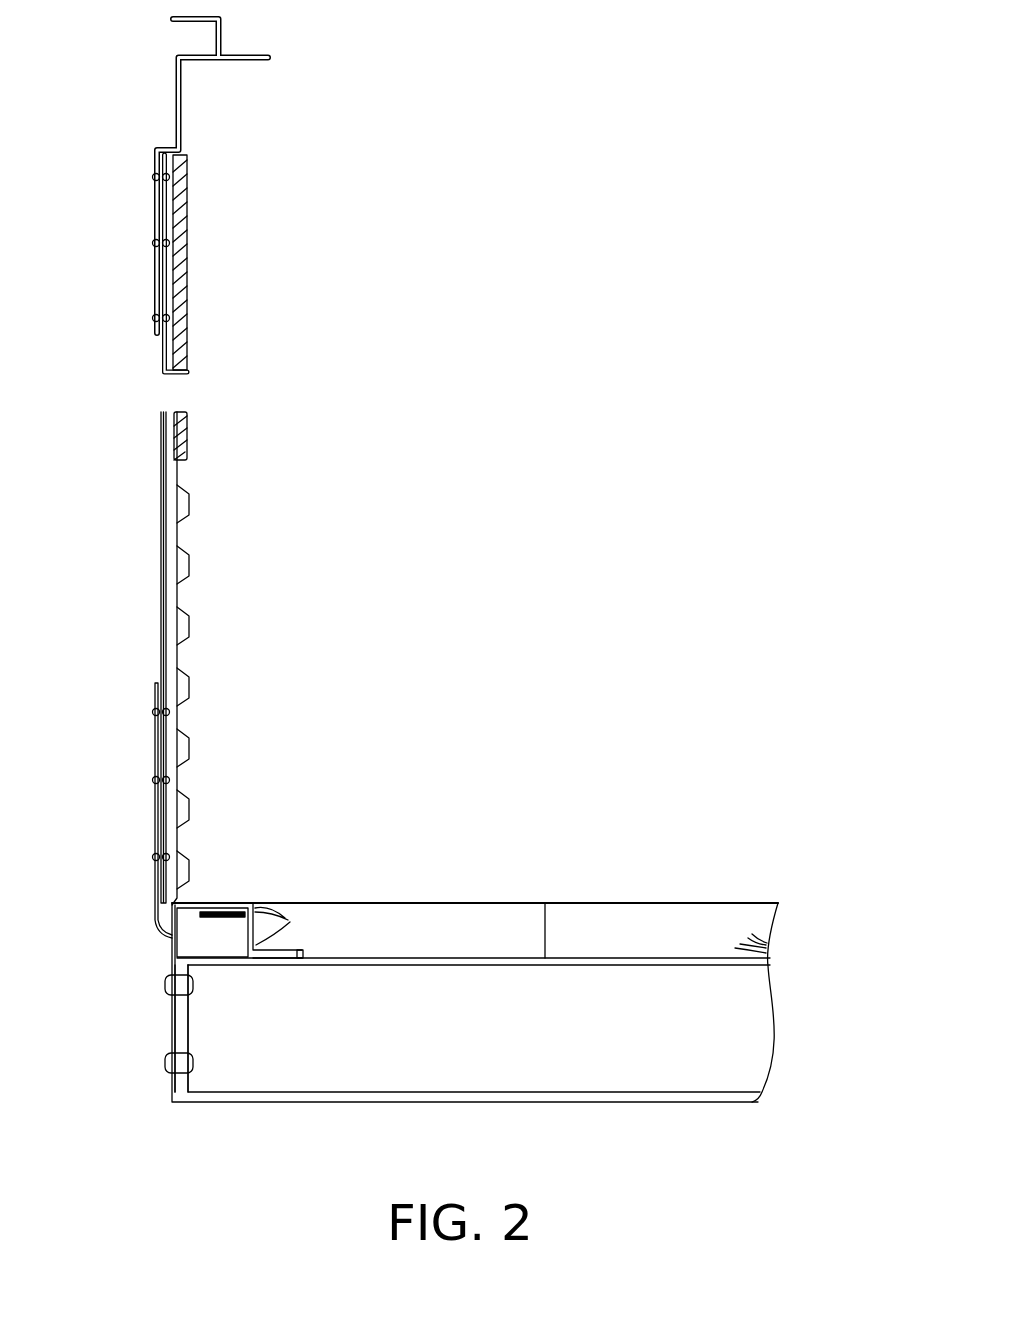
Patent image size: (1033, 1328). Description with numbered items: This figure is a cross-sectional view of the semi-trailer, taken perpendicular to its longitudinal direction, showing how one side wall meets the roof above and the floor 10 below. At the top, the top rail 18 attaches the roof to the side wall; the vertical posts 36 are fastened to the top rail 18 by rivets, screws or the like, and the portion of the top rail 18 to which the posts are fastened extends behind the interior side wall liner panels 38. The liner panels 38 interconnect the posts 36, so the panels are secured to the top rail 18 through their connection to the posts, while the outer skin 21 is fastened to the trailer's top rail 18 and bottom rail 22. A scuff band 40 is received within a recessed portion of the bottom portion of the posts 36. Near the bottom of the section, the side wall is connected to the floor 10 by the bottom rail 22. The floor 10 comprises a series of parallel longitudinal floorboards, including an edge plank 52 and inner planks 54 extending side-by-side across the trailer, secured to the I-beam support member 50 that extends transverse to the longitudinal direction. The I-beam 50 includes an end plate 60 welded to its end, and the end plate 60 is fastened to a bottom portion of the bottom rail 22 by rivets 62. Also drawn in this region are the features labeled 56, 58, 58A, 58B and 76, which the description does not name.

The floor 10 is at (497, 897).
The top rail 18 is at (183, 122).
The outer skin 21 is at (161, 535).
The bottom rail 22 is at (155, 922).
The vertical post 36 is at (190, 503).
The interior side wall liner panel 38 is at (188, 230).
The scuff band 40 is at (192, 613).
The I-beam support member 50 is at (442, 1102).
The edge plank 52 is at (426, 915).
The inner plank 54 is at (648, 915).
The tab 56 is at (298, 963).
The pocket 58 is at (220, 915).
The pocket bottom 58A is at (265, 962).
The spring seal 58B is at (286, 920).
The end plate 60 is at (190, 1040).
The rivet 62 is at (165, 985).
The retaining channel 76 is at (155, 243).